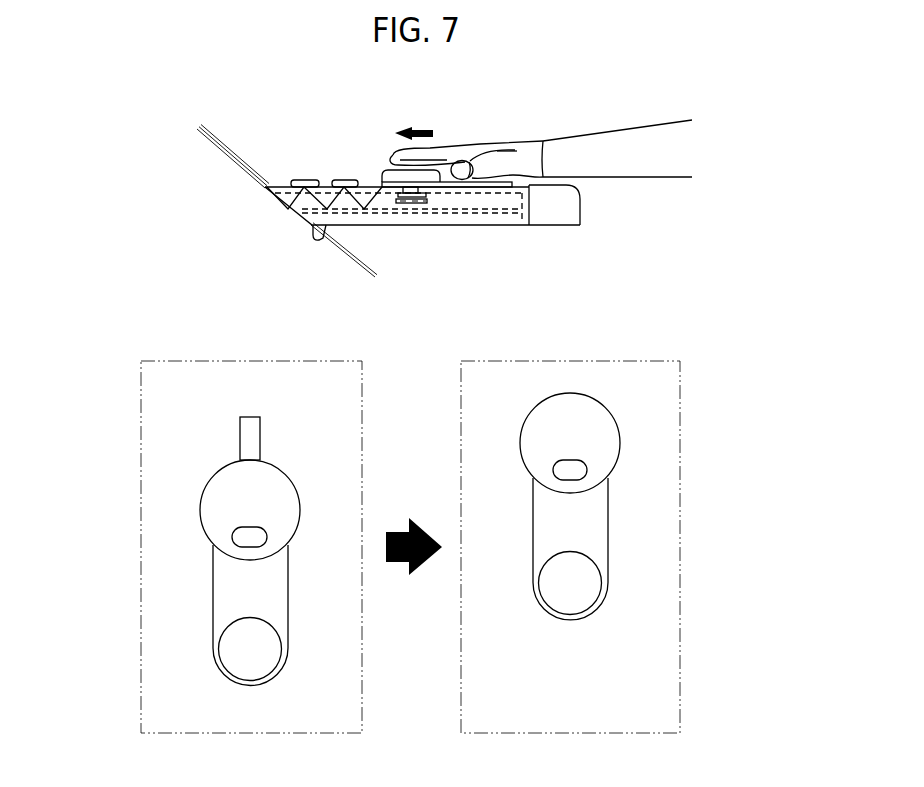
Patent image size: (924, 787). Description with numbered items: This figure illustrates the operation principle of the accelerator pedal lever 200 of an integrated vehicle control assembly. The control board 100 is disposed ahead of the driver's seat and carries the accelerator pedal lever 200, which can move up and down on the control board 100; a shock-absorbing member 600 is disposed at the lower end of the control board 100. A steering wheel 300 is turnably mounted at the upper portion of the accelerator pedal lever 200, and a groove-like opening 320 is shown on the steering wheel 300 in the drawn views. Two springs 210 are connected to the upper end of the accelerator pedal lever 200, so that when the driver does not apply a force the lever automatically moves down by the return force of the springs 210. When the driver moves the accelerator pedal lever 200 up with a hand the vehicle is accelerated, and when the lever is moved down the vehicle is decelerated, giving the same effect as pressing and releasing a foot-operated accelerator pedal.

The control board 100 is at (472, 218).
The accelerator pedal lever 200 is at (490, 187).
The springs 210 is at (383, 187).
The steering wheel 300 is at (392, 175).
The slot 320 is at (242, 536).
The shock-absorbing member 600 is at (560, 205).